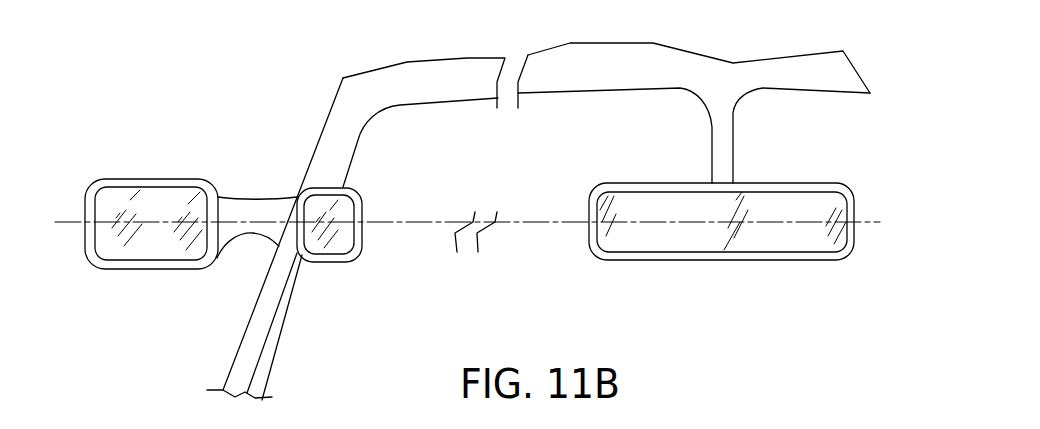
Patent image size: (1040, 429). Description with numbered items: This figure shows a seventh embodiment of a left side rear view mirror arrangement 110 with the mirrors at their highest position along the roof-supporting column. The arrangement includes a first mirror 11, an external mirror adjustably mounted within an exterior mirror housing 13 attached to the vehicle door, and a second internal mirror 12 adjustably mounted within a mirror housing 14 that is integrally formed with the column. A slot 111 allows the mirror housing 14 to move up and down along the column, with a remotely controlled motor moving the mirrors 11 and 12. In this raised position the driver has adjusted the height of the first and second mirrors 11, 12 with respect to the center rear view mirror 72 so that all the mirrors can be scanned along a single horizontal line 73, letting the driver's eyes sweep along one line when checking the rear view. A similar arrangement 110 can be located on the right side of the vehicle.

The left side rear view mirror arrangement 110 is at (465, 295).
The first mirror 11 is at (132, 245).
The exterior mirror housing 13 is at (155, 180).
The second internal mirror 12 is at (340, 188).
The mirror housing 14 is at (323, 258).
The slot 111 is at (283, 317).
The center rear view mirror 72 is at (693, 237).
The horizontal line 73 is at (867, 222).